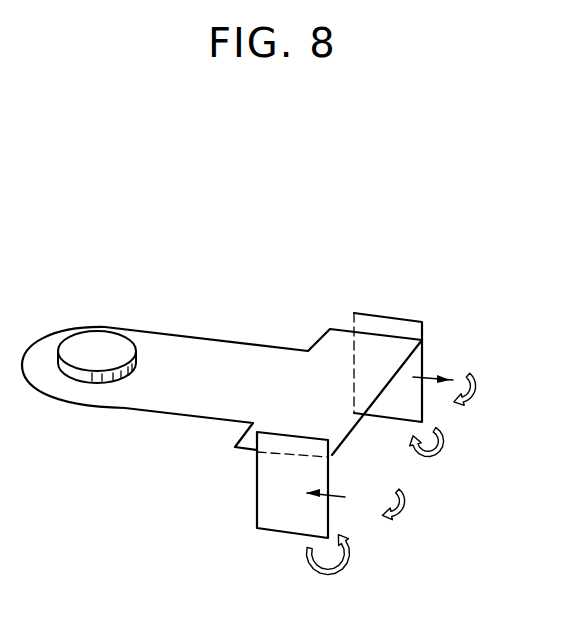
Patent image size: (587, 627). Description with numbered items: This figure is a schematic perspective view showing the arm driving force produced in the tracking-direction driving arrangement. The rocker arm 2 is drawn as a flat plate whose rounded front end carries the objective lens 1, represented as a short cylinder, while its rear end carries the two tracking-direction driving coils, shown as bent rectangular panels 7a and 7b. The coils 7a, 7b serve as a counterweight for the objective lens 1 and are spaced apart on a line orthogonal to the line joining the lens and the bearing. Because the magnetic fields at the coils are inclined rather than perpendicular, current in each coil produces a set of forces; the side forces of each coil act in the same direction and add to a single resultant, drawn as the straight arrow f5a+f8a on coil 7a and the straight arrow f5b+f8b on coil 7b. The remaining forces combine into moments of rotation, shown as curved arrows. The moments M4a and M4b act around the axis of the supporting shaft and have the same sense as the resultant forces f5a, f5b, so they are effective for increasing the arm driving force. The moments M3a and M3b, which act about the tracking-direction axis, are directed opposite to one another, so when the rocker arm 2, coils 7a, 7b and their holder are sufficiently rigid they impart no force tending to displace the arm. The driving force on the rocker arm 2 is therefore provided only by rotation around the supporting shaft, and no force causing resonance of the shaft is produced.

The objective lens 1 is at (85, 340).
The rocker arm 2 is at (165, 350).
The tracking-direction driving coil 7a is at (298, 437).
The tracking-direction driving coil 7b is at (402, 318).
The resultant force f5a+f8a f5a is at (335, 497).
The resultant force f5b+f8b f5b is at (440, 377).
The moment of rotation M3a is at (350, 562).
The moment of rotation M3b is at (441, 445).
The moment of rotation M4a is at (405, 505).
The moment of rotation M4b is at (483, 398).